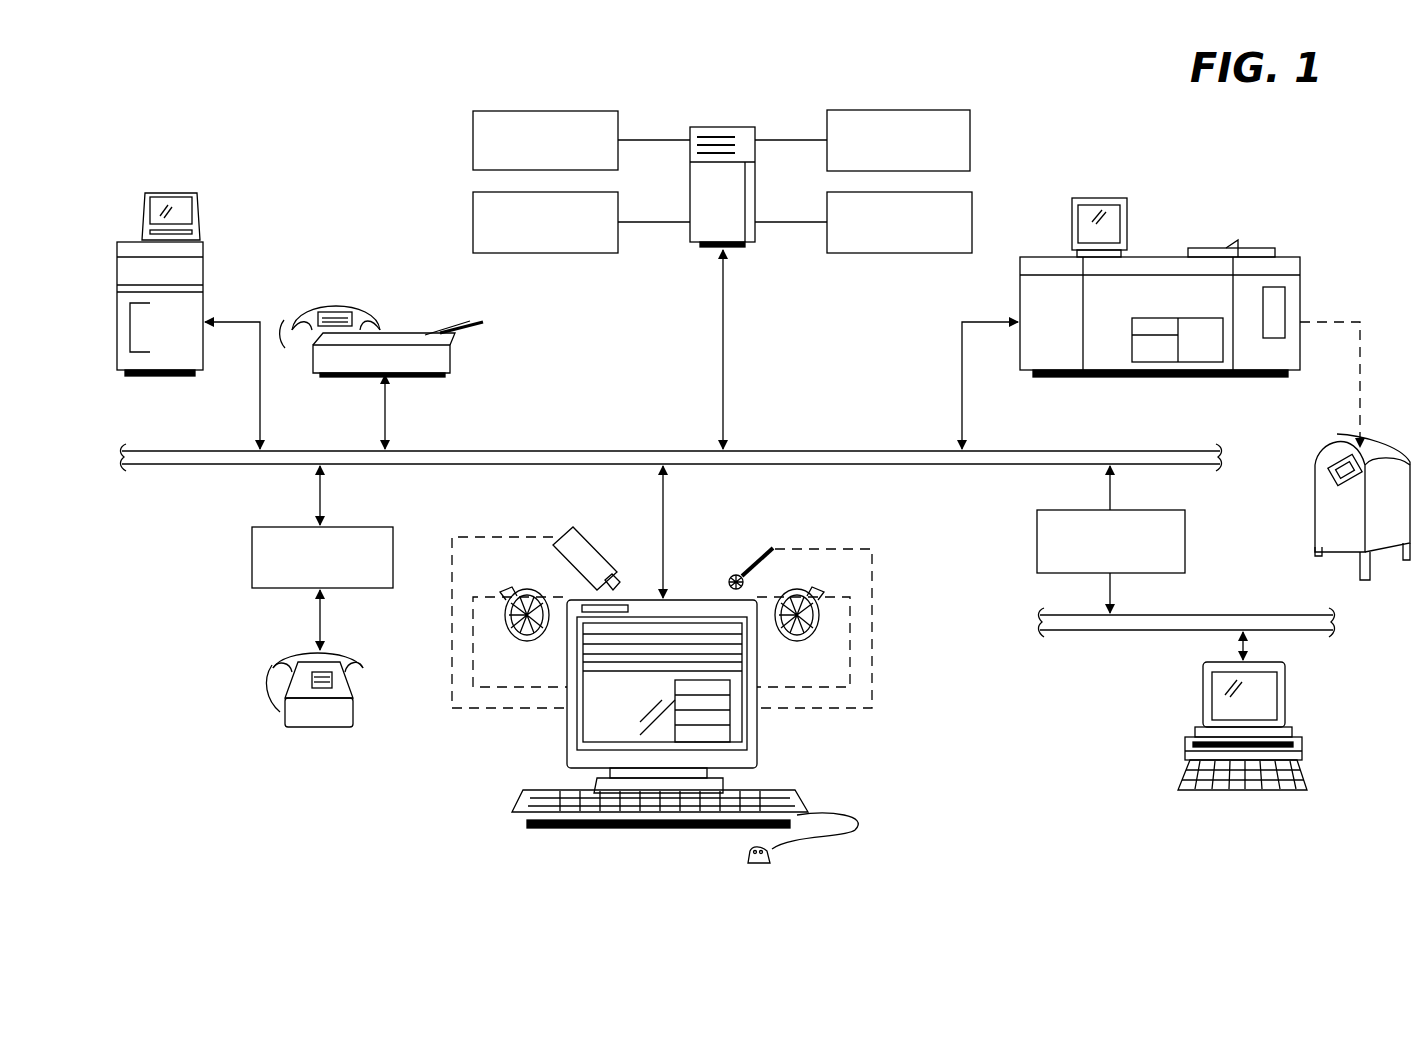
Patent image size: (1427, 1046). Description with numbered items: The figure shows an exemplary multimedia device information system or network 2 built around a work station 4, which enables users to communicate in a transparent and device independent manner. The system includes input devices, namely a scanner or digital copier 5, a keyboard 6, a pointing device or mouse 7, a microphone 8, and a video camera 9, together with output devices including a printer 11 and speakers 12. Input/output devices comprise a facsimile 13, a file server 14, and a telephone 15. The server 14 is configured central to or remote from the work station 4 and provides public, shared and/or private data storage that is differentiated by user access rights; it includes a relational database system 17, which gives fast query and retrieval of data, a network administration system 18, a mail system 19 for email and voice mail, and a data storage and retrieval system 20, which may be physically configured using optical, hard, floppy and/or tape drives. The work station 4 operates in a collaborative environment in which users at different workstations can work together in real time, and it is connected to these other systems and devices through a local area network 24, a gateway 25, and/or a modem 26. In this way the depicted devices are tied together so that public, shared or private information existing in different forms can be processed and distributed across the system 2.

The multimedia device information system or network 2 is at (236, 79).
The work station 4 is at (507, 757).
The scanner or Digital Copier 5 is at (188, 303).
The keyboard 6 is at (752, 795).
The pointing device or mouse 7 is at (765, 871).
The microphone 8 is at (753, 556).
The video camera 9 is at (580, 543).
The printer 11 is at (1161, 305).
The speakers 12 is at (537, 640).
The facsimile 13 is at (415, 377).
The file server 14 is at (722, 126).
The telephone 15 is at (318, 727).
The relational database system 17 is at (970, 118).
The network administration system 18 is at (473, 118).
The mail system 19 is at (885, 253).
The data storage and retrieval system 20 is at (560, 253).
The local area network (LAN) 24 is at (797, 450).
The gateway 25 is at (1037, 525).
The modem 26 is at (252, 540).